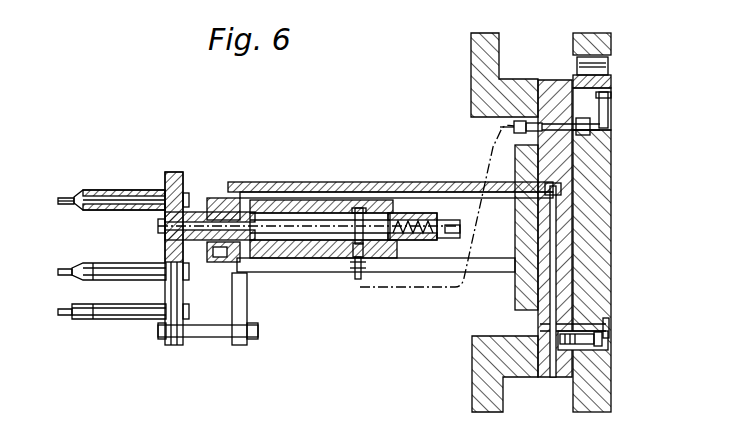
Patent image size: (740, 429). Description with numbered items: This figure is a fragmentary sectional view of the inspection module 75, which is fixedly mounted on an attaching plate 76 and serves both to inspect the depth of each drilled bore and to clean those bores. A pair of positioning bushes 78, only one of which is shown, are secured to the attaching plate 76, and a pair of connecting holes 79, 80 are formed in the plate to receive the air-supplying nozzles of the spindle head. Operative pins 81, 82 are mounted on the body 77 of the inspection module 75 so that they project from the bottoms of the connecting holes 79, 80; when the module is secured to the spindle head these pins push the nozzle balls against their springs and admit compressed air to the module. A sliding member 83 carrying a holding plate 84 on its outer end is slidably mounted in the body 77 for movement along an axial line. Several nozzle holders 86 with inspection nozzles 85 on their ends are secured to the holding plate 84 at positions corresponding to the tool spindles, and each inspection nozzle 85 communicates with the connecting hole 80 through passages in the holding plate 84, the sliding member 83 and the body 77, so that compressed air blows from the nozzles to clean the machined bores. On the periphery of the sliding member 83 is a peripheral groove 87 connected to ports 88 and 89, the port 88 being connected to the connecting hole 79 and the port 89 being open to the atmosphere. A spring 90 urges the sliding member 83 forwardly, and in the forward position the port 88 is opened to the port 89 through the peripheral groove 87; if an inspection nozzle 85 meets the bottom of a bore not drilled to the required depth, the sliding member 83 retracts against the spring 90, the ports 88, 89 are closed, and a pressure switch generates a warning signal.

The inspection module 75 is at (338, 182).
The attaching plate 76 is at (606, 170).
The body 77 is at (294, 182).
The positioning bush 78 is at (613, 45).
The connecting hole 79 is at (609, 98).
The connecting hole 80 is at (608, 326).
The operative pin 81 is at (600, 122).
The operative pin 82 is at (598, 340).
The sliding member 83 is at (212, 198).
The holding plate 84 is at (174, 172).
The inspection nozzle 85 is at (66, 197).
The nozzle holder 86 is at (126, 190).
The peripheral groove 87 is at (342, 258).
The port 88 is at (358, 279).
The port 89 is at (360, 205).
The spring 90 is at (412, 245).